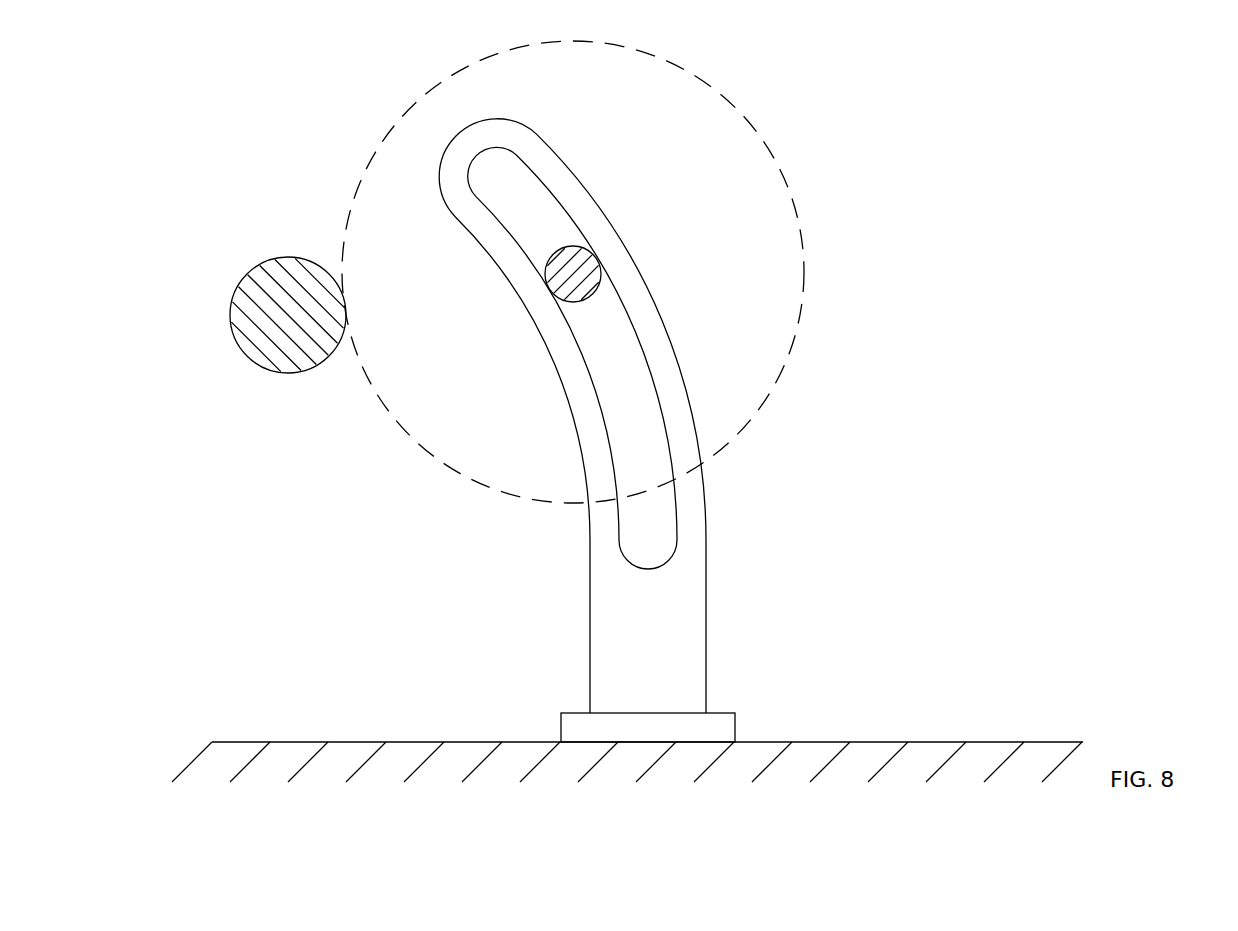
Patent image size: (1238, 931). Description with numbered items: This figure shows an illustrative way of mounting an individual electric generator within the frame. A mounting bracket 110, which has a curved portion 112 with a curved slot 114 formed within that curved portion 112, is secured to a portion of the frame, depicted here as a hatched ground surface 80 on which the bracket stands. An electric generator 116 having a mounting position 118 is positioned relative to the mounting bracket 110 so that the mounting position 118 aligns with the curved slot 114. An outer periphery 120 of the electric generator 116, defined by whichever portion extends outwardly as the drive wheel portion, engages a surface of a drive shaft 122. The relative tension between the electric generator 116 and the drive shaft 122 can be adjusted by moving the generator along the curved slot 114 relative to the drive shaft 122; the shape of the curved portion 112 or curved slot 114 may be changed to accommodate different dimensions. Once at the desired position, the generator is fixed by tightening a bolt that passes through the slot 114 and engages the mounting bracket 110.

The ground surface 80 is at (944, 718).
The mounting bracket 110 is at (656, 430).
The curved portion 112 is at (700, 363).
The curved slot 114 is at (603, 420).
The electric generator 116 is at (595, 272).
The mounting position 118 is at (588, 267).
The outer periphery 120 is at (410, 108).
The drive shaft 122 is at (252, 280).